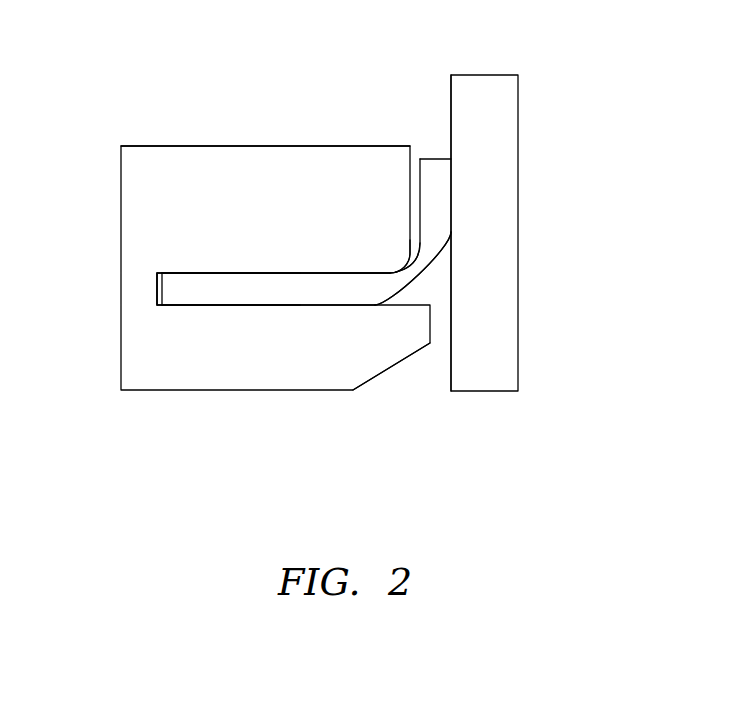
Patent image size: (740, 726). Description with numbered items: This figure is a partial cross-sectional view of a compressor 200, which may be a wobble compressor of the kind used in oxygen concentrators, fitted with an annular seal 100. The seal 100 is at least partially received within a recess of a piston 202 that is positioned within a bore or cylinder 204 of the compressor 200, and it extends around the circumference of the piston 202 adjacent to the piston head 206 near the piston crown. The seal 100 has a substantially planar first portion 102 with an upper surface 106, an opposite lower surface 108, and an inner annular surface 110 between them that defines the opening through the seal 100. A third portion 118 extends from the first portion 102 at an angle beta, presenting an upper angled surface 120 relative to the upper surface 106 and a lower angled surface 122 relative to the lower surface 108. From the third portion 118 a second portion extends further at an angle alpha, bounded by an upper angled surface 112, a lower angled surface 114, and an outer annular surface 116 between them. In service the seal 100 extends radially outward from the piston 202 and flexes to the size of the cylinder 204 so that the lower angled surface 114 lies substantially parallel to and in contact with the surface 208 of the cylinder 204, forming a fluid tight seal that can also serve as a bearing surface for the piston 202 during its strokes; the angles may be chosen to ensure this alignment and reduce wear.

The compressor 200 is at (258, 70).
The piston 202 is at (112, 196).
The cylinder 204 is at (432, 394).
The piston head 206 is at (168, 146).
The surface of the cylinder 208 is at (450, 357).
The annular seal 100 is at (286, 317).
The first portion 102 is at (286, 263).
The upper surface 106 is at (206, 273).
The lower surface 108 is at (205, 306).
The inner annular surface 110 is at (155, 290).
The upper angled surface 112 is at (419, 183).
The lower angled surface 114 is at (453, 197).
The outer annular surface 116 is at (438, 158).
The third portion 118 is at (446, 280).
The upper angled surface 120 is at (404, 258).
The lower angled surface 122 is at (430, 283).